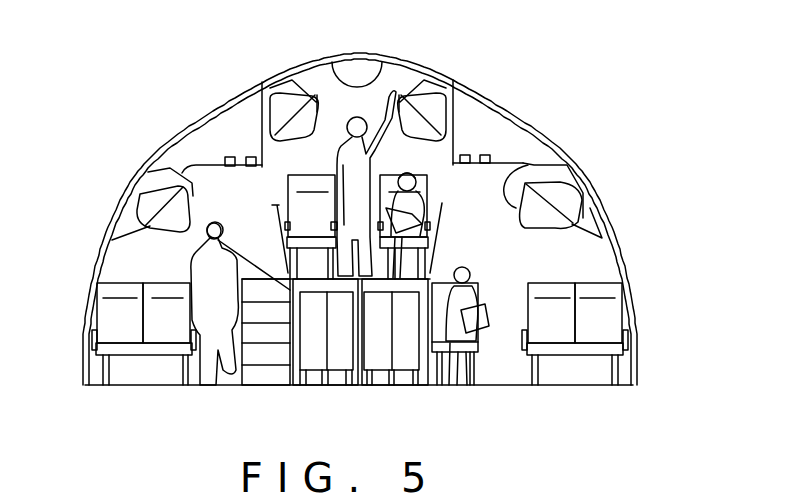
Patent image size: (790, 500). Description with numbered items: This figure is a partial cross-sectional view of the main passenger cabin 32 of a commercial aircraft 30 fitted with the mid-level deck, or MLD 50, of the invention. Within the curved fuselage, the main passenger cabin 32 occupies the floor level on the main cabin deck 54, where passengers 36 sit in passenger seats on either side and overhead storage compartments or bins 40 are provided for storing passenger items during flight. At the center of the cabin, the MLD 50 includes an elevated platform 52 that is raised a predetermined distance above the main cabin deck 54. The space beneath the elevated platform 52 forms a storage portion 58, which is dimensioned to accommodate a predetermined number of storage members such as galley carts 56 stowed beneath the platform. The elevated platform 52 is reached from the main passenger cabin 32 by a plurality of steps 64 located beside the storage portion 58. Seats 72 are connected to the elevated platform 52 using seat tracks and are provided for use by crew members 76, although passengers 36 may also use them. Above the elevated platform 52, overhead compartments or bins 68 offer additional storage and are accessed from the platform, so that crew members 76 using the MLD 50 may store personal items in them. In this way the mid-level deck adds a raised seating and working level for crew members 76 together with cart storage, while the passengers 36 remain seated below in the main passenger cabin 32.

The aircraft 30 is at (527, 86).
The main passenger cabin 32 is at (134, 264).
The passengers 36 is at (215, 318).
The overhead storage compartments or bins 40 is at (512, 164).
The MLD 50 is at (468, 253).
The elevated platform 52 is at (207, 228).
The main cabin deck 54 is at (140, 387).
The galley carts 56 is at (318, 350).
The storage portion 58 is at (296, 382).
The steps 64 is at (260, 362).
The overhead compartments or bins 68 is at (308, 82).
The seats 72 is at (300, 207).
The crew members 76 is at (366, 122).